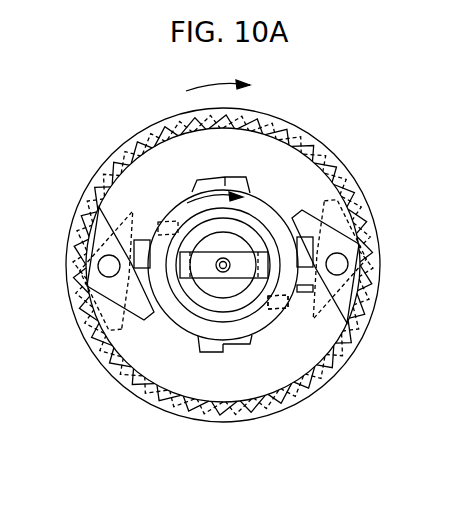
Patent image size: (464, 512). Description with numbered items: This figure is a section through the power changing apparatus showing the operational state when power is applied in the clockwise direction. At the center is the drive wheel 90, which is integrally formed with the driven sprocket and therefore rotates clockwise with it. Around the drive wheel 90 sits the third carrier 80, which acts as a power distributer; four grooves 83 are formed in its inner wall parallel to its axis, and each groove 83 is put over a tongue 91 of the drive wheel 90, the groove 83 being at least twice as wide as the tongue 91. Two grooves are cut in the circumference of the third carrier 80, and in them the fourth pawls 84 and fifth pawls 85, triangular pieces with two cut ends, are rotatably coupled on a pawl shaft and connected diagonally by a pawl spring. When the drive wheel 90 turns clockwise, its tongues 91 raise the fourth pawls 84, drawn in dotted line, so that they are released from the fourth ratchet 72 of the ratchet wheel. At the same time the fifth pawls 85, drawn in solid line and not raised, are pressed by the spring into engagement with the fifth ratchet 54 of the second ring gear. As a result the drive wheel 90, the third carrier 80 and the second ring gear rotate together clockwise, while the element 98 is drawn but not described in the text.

The fifth ratchet 54 is at (122, 158).
The fourth ratchet 72 is at (103, 178).
The fifth pawl 85 is at (101, 205).
The fourth pawl 84 is at (115, 325).
The drive wheel 90 is at (187, 323).
The tongue 91 is at (212, 347).
The groove 83 is at (240, 347).
The third carrier 80 is at (280, 358).
The lug 98 is at (285, 300).